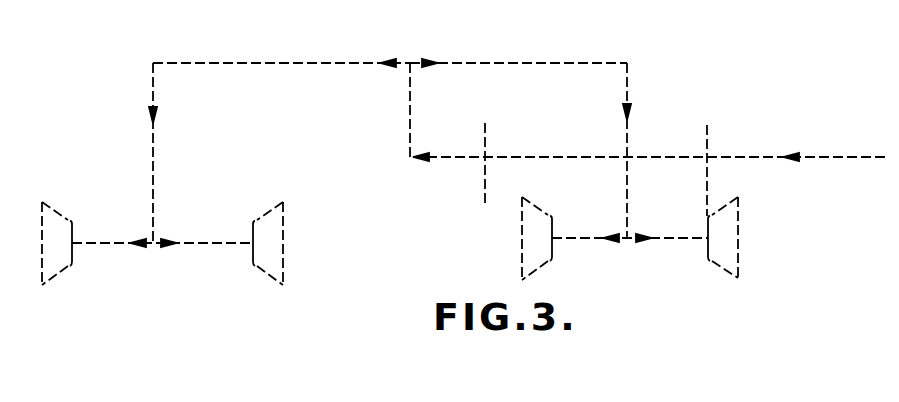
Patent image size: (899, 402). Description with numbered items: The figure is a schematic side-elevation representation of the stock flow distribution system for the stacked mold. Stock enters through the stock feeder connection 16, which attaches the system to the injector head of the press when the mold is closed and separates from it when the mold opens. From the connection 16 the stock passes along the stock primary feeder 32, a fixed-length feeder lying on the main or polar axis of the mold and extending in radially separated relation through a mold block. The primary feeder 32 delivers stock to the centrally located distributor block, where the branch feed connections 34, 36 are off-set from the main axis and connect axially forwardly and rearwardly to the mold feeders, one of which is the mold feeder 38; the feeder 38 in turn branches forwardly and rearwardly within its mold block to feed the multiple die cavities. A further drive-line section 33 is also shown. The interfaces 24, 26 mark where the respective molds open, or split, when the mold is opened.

The stock feeder connection 16 is at (853, 157).
The interface 24 is at (707, 128).
The interface 26 is at (485, 133).
The stock primary feeder 32 is at (567, 157).
The drive line section 33 is at (410, 128).
The branch feed connection 34 is at (360, 63).
The branch feed connection 36 is at (580, 63).
The mold feeder 38 is at (153, 160).